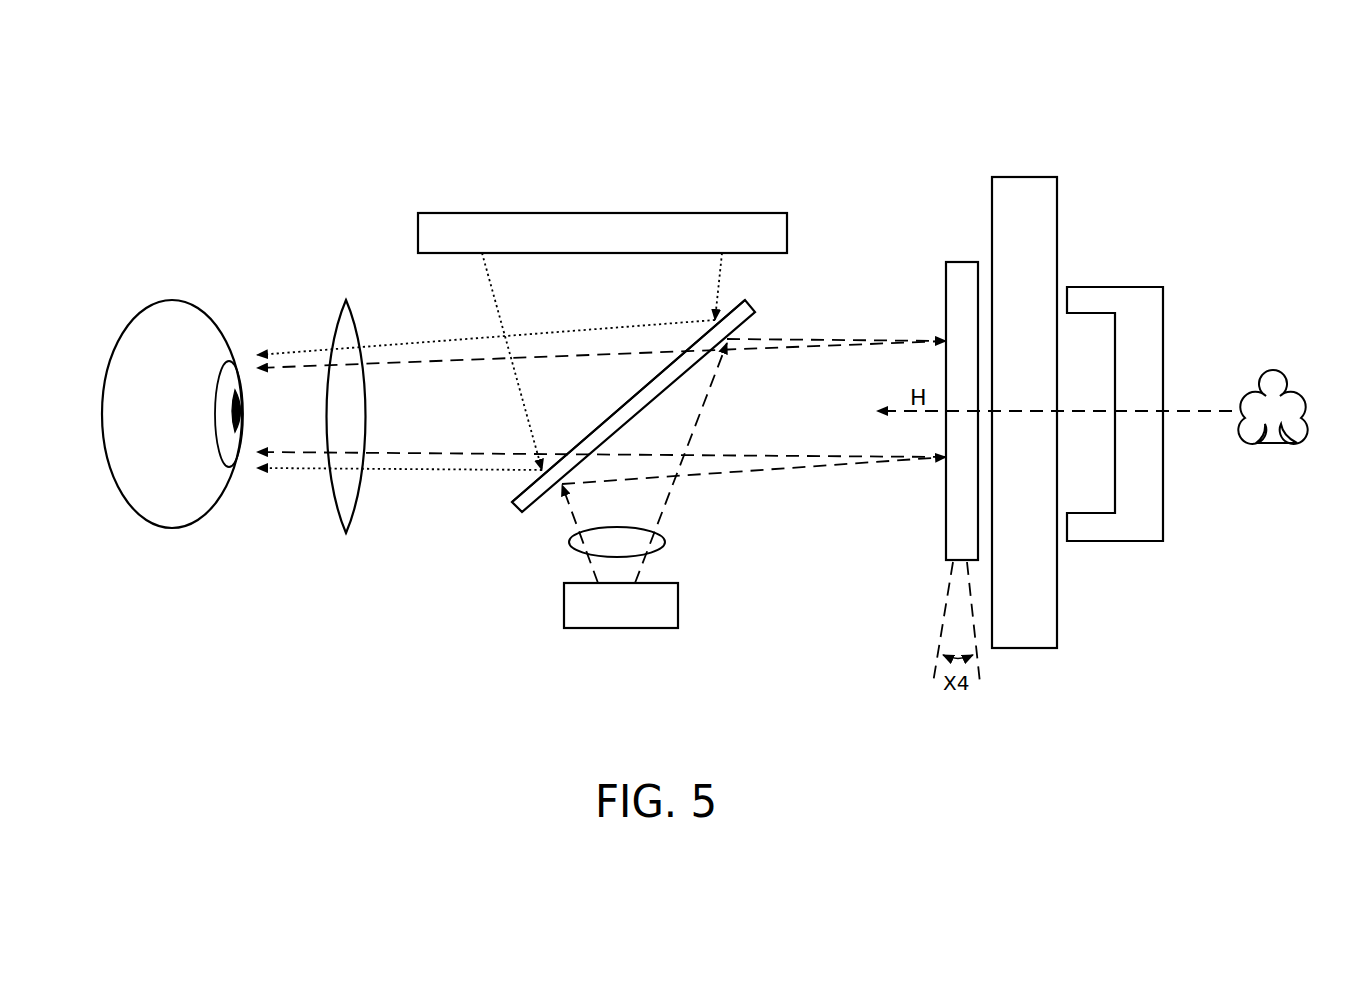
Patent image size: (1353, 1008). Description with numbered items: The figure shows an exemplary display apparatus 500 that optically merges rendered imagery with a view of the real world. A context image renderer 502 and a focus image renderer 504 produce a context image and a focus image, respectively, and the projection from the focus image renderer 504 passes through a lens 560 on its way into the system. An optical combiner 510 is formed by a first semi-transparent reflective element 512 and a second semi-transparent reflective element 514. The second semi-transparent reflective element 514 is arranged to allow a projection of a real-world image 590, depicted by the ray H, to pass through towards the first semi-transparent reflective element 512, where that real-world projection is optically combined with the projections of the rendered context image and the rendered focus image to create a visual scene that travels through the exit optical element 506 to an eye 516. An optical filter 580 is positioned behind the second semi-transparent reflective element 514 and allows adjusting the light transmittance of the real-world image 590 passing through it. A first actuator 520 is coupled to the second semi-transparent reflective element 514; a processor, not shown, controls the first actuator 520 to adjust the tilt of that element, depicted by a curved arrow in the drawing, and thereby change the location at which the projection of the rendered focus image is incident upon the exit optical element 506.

The display apparatus 500 is at (1203, 142).
The context image renderer 502 is at (590, 212).
The focus image renderer 504 is at (609, 628).
The exit optical element 506 is at (345, 305).
The optical combiner 510 is at (788, 294).
The first semi-transparent reflective element 512 is at (605, 423).
The second semi-transparent reflective element 514 is at (960, 262).
The eye 516 is at (212, 510).
The first actuator 520 is at (1122, 287).
The lens 560 is at (665, 540).
The optical filter 580 is at (1022, 177).
The real-world image 590 is at (1263, 375).